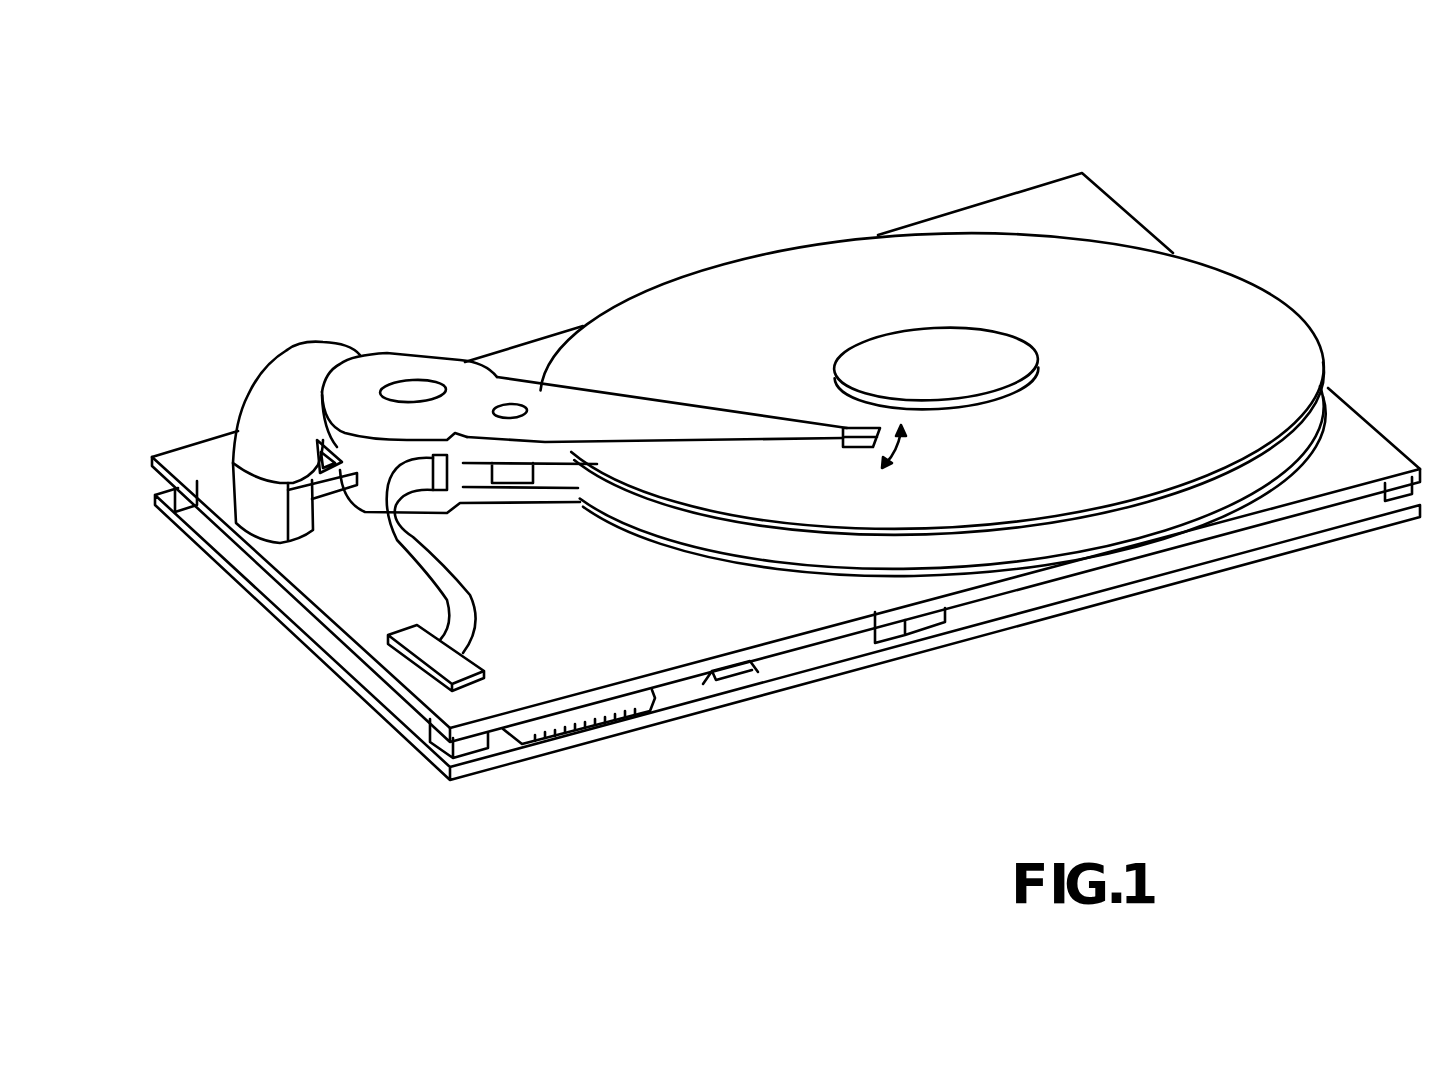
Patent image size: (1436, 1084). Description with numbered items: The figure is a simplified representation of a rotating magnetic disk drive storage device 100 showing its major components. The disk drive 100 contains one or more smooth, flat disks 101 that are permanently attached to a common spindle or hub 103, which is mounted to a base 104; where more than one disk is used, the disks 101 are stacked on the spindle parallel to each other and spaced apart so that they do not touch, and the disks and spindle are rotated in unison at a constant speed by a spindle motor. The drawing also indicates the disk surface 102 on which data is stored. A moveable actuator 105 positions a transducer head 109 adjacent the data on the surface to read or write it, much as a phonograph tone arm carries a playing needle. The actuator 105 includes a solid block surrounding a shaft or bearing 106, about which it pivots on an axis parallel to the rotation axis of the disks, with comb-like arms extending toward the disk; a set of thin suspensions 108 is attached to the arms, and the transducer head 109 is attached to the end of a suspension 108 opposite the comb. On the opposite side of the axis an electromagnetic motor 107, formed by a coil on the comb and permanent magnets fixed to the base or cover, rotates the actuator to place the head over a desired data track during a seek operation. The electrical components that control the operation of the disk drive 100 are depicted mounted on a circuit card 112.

The rotating magnetic disk drive storage device 100 is at (1174, 184).
The disks 101 is at (1278, 433).
The disk recording surface 102 is at (877, 260).
The spindle or hub 103 is at (974, 346).
The base 104 is at (1355, 428).
The actuator 105 is at (441, 357).
The shaft or bearing 106 is at (409, 387).
The electromagnetic motor 107 is at (238, 427).
The suspensions 108 is at (583, 410).
The transducer head 109 is at (866, 449).
The circuit card 112 is at (813, 681).